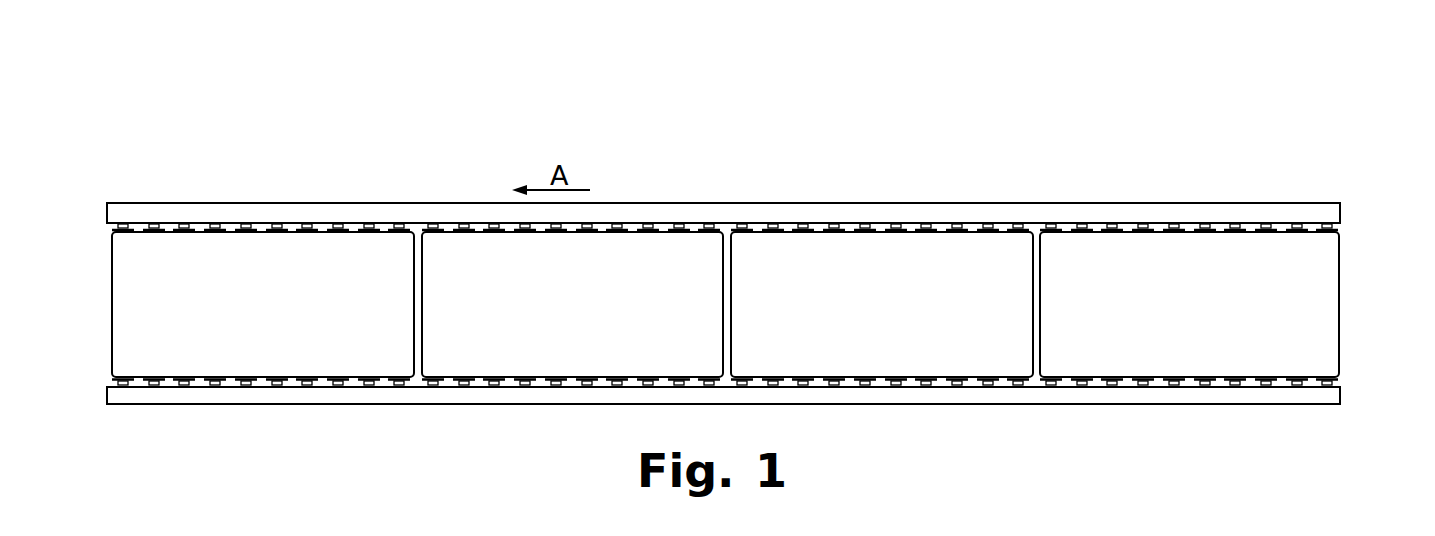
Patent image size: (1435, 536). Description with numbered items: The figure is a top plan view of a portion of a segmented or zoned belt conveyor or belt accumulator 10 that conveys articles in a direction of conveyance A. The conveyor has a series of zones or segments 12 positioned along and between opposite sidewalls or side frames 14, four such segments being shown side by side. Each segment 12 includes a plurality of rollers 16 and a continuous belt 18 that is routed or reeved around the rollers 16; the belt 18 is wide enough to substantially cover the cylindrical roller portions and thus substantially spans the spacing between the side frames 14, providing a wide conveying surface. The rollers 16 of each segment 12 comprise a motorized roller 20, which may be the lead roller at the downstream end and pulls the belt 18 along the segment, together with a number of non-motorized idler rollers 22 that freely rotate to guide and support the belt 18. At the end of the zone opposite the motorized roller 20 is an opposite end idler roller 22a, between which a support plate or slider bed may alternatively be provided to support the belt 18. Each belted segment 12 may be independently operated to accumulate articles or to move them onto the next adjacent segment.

The belt conveyor 10 is at (562, 112).
The segment 12 is at (303, 152).
The side frame 14 is at (978, 203).
The roller 16 is at (356, 220).
The belt 18 is at (168, 250).
The motorized roller 20 is at (108, 226).
The idler roller 22 is at (257, 222).
The end idler roller 22a is at (396, 222).